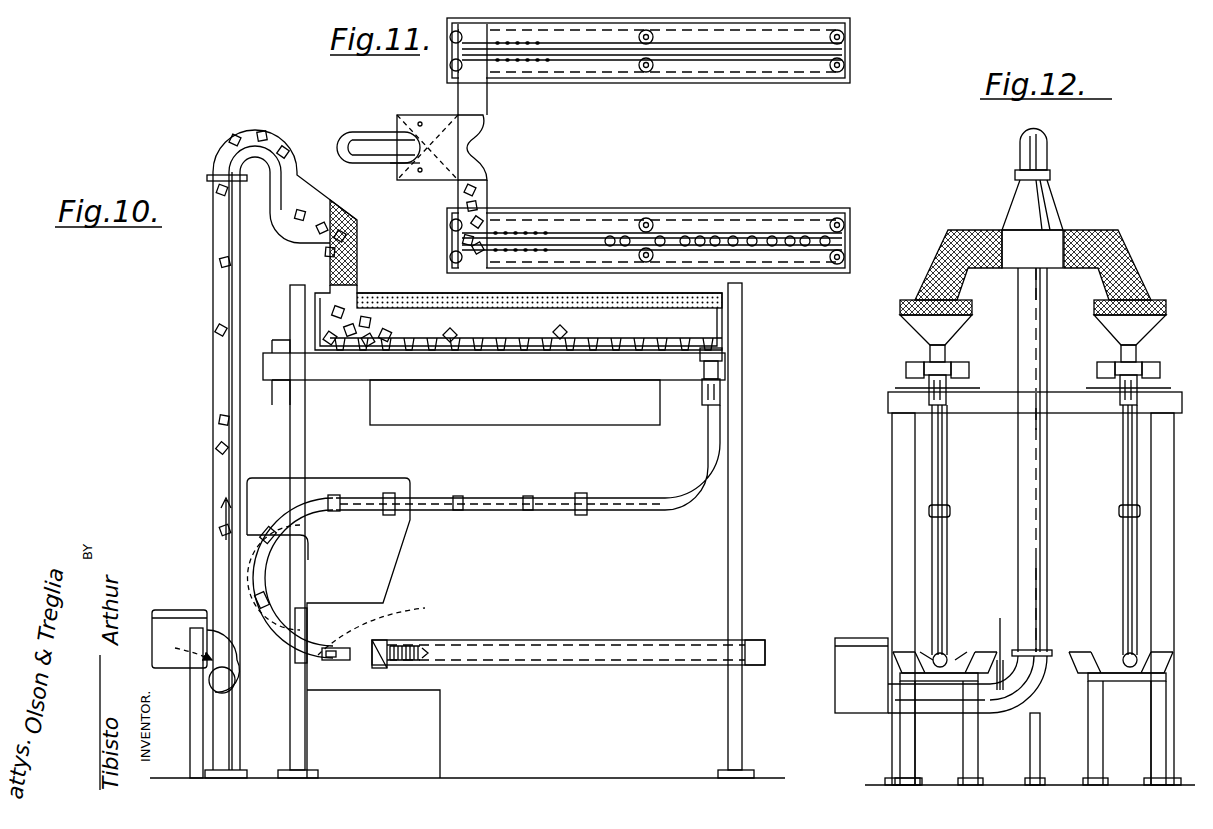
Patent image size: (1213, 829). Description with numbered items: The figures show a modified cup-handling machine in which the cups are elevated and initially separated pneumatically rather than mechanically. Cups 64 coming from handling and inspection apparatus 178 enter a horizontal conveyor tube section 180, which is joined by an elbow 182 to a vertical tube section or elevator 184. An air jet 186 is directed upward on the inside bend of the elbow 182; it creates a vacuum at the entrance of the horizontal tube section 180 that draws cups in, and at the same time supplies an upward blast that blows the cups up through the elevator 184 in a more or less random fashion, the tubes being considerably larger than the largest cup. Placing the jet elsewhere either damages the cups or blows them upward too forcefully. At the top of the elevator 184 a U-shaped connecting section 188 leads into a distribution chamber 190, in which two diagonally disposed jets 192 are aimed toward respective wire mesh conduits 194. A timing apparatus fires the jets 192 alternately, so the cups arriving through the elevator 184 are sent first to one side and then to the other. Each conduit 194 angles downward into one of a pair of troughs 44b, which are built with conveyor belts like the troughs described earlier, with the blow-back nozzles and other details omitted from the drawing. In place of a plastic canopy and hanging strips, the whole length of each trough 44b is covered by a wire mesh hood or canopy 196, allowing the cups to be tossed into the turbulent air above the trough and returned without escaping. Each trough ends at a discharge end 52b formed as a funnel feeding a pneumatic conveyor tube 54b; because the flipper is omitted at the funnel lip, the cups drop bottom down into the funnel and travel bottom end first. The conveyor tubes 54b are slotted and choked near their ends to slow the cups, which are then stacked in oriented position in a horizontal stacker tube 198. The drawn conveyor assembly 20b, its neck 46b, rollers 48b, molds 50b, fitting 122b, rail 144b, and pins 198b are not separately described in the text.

In FIG. 10, the mold conveyor assembly 20b is at (748, 357).
In FIG. 11, the mold conveyor assembly 20b is at (764, 200).
In FIG. 11, the trough 44b is at (676, 58).
In FIG. 12, the trough 44b is at (912, 330).
In FIG. 12, the funnel neck 46b is at (938, 350).
In FIG. 11, the guide rollers 48b is at (625, 45).
In FIG. 10, the molds 50b is at (599, 350).
In FIG. 11, the molds 50b is at (735, 48).
In FIG. 10, the discharge end 52b is at (708, 346).
In FIG. 12, the discharge end 52b is at (922, 382).
In FIG. 10, the pneumatic conveyor tube 54b is at (608, 497).
In FIG. 10, the cup 64 is at (458, 336).
In FIG. 11, the cup 64 is at (463, 212).
In FIG. 10, the pipe fitting 122b is at (393, 645).
In FIG. 11, the conveyor rail 144b is at (599, 230).
In FIG. 10, the handling and inspection apparatus 178 is at (178, 606).
In FIG. 12, the handling and inspection apparatus 178 is at (850, 636).
In FIG. 10, the horizontal conveyor tube section 180 is at (233, 690).
In FIG. 12, the horizontal conveyor tube section 180 is at (1000, 716).
In FIG. 12, the elbow 182 is at (1045, 689).
In FIG. 10, the vertical tube section or elevator 184 is at (213, 367).
In FIG. 11, the vertical tube section or elevator 184 is at (340, 137).
In FIG. 12, the vertical tube section or elevator 184 is at (1047, 480).
In FIG. 12, the air jet 186 is at (1043, 680).
In FIG. 10, the U-shaped connecting section 188 is at (241, 130).
In FIG. 11, the U-shaped connecting section 188 is at (357, 133).
In FIG. 12, the U-shaped connecting section 188 is at (1050, 143).
In FIG. 10, the distribution chamber 190 is at (312, 197).
In FIG. 11, the distribution chamber 190 is at (435, 117).
In FIG. 12, the distribution chamber 190 is at (1052, 188).
In FIG. 11, the jet 192 is at (420, 123).
In FIG. 10, the wire mesh conduit 194 is at (357, 260).
In FIG. 11, the wire mesh conduit 194 is at (480, 100).
In FIG. 12, the wire mesh conduit 194 is at (953, 232).
In FIG. 10, the wire mesh hood or canopy 196 is at (400, 292).
In FIG. 12, the wire mesh hood or canopy 196 is at (902, 302).
In FIG. 10, the horizontal stacker tube 198 is at (531, 648).
In FIG. 12, the horizontal stacker tube 198 is at (944, 655).
In FIG. 11, the guide pins 198b is at (556, 46).